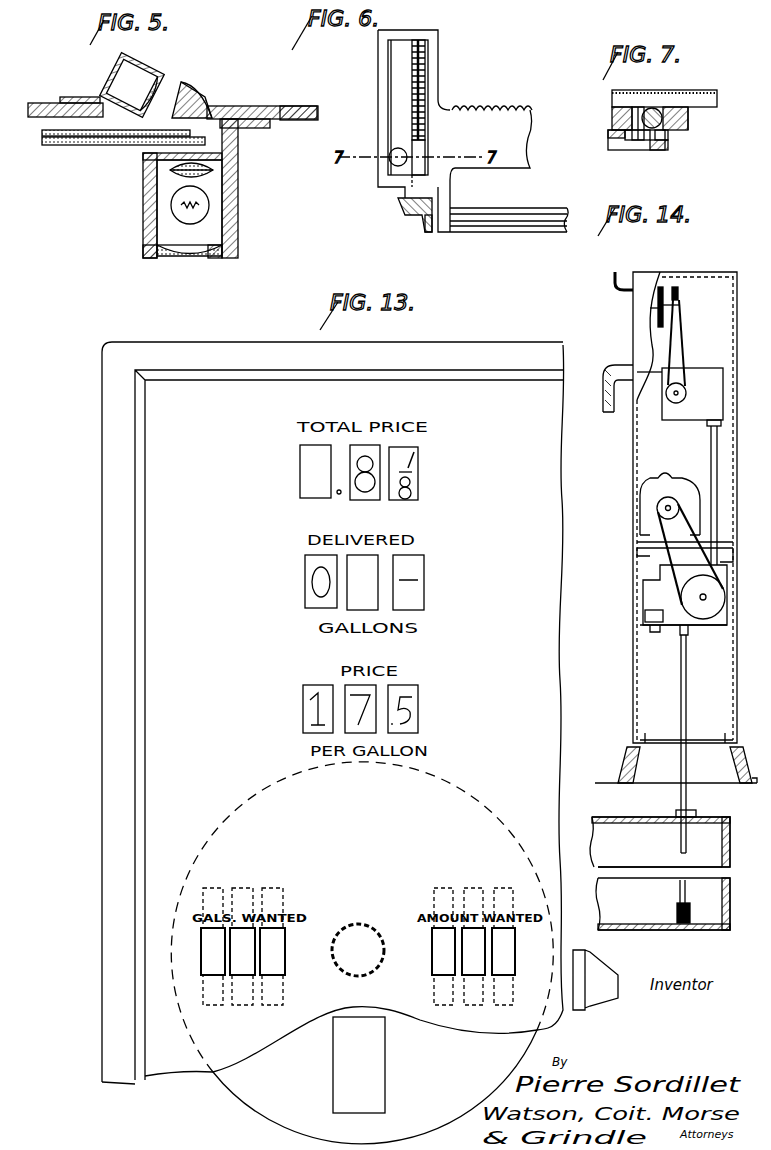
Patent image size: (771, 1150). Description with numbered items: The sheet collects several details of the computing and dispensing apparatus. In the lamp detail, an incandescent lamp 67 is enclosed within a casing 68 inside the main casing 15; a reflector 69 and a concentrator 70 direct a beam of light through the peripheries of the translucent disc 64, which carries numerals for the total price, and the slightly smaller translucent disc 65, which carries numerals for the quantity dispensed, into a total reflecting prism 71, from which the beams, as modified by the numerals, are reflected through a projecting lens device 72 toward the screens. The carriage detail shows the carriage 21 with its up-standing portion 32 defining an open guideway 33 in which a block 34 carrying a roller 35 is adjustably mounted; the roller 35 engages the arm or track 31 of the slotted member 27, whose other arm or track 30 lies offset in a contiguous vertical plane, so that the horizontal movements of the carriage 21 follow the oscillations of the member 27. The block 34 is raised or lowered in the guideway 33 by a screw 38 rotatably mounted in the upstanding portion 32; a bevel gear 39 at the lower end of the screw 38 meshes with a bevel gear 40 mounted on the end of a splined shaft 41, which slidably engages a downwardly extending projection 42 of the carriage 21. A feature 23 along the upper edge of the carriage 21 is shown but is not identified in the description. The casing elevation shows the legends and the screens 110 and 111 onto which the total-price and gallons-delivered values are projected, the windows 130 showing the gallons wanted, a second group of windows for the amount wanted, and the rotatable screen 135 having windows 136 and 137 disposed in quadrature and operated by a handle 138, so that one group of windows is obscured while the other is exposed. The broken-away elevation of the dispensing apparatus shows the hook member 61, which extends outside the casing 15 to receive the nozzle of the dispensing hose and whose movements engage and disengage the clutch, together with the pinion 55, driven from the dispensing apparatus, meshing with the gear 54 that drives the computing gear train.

In FIG. 5, the projecting lens device 72 is at (140, 78).
In FIG. 5, the total reflecting prism 71 is at (192, 97).
In FIG. 5, the translucent disc 65 is at (45, 137).
In FIG. 5, the translucent disc 64 is at (72, 146).
In FIG. 5, the concentrator 70 is at (213, 166).
In FIG. 5, the casing 68 is at (143, 198).
In FIG. 5, the incandescent lamp 67 is at (174, 215).
In FIG. 5, the reflector 69 is at (178, 256).
In FIG. 6, the up-standing portion 32 is at (388, 70).
In FIG. 7, the up-standing portion 32 is at (612, 116).
In FIG. 6, the open guideway 33 is at (395, 88).
In FIG. 6, the screw 38 is at (425, 72).
In FIG. 6, the serrations 23 is at (500, 108).
In FIG. 6, the carriage 21 is at (520, 132).
In FIG. 7, the carriage 21 is at (700, 92).
In FIG. 6, the roller 35 is at (390, 162).
In FIG. 7, the roller 35 is at (638, 142).
In FIG. 6, the block 34 is at (400, 172).
In FIG. 7, the block 34 is at (655, 112).
In FIG. 6, the bevel gear 39 is at (405, 210).
In FIG. 6, the bevel gear 40 is at (427, 232).
In FIG. 6, the downwardly extending projection 42 is at (448, 234).
In FIG. 6, the splined shaft 41 is at (528, 234).
In FIG. 7, the arm or track 31 is at (608, 142).
In FIG. 7, the arm or track 30 is at (668, 146).
In FIG. 7, the slotted member 27 is at (615, 152).
In FIG. 14, the hook member 61 is at (612, 290).
In FIG. 14, the pinion 55 is at (662, 286).
In FIG. 14, the gear 54 is at (686, 324).
In FIG. 13, the casing 15 is at (102, 590).
In FIG. 13, the small screen 110 is at (389, 510).
In FIG. 13, the small screen 111 is at (305, 590).
In FIG. 13, the window 130 is at (285, 964).
In FIG. 13, the window 136 is at (414, 975).
In FIG. 13, the rotatable screen 135 is at (243, 1082).
In FIG. 13, the window 137 is at (386, 1046).
In FIG. 13, the handle 138 is at (358, 935).